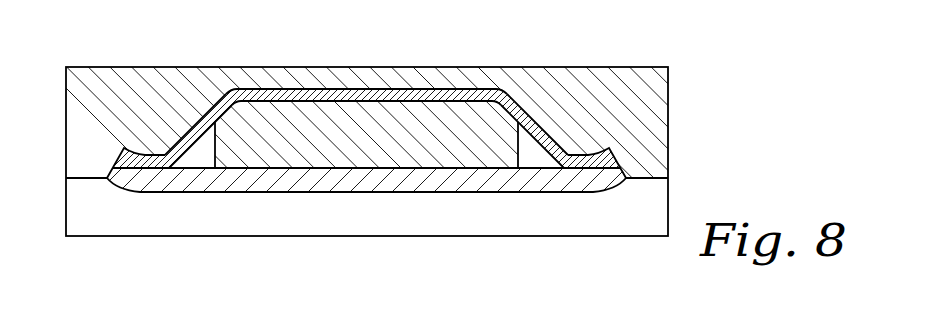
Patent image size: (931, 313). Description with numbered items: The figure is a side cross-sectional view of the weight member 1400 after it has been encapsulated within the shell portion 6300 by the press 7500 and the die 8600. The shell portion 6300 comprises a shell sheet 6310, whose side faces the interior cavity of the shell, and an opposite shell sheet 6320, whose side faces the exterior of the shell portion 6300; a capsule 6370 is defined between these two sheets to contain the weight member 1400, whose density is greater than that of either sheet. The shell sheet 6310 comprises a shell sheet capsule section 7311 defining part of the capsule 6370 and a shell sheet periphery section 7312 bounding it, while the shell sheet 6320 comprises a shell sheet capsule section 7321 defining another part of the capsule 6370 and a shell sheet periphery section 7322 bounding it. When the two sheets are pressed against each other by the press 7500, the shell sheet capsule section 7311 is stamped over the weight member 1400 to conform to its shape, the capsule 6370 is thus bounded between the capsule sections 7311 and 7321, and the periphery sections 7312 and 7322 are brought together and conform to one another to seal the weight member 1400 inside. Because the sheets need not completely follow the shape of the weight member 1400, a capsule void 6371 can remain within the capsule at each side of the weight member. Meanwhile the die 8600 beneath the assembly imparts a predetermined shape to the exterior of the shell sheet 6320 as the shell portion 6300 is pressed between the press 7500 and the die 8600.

The weight member 1400 is at (431, 120).
The shell portion 6300 is at (465, 188).
The shell sheet 6310 is at (192, 128).
The shell sheet 6320 is at (223, 177).
The capsule 6370 is at (203, 152).
The capsule void 6371 is at (527, 153).
The shell sheet capsule section 7311 is at (335, 99).
The shell sheet periphery section 7312 is at (143, 153).
The shell sheet capsule section 7321 is at (358, 180).
The shell sheet periphery section 7322 is at (142, 180).
The press 7500 is at (614, 85).
The die 8600 is at (608, 225).